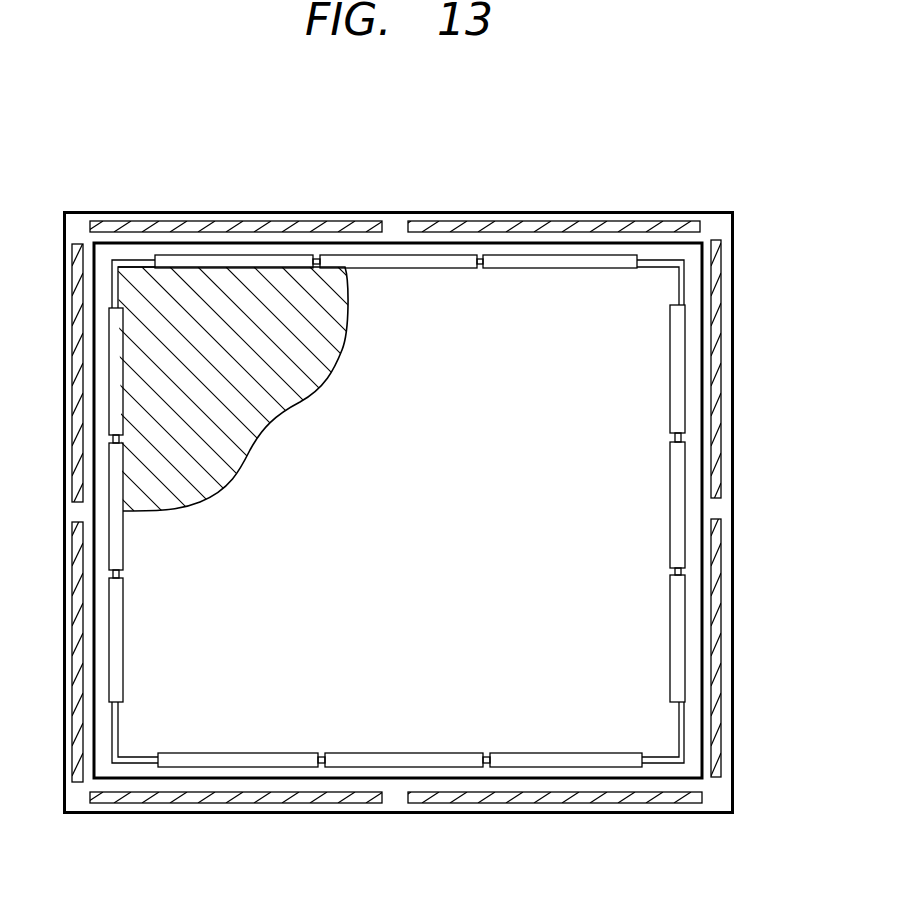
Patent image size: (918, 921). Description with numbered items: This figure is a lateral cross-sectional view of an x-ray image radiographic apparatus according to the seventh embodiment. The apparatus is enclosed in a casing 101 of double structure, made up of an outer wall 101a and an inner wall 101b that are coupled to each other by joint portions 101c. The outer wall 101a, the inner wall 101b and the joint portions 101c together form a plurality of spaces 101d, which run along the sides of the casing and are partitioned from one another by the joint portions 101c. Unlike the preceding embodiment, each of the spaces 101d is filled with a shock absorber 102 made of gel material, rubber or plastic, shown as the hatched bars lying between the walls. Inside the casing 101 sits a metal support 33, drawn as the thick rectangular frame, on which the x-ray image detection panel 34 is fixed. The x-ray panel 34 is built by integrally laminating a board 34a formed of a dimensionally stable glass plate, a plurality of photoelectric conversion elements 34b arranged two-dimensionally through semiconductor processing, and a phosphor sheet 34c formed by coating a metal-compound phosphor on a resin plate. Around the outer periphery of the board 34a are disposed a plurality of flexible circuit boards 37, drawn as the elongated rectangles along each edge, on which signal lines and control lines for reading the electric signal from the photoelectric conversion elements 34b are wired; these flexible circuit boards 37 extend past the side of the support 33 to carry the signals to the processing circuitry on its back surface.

The support 33 is at (110, 260).
The x-ray image detection panel 34 is at (417, 415).
The board 34a is at (140, 260).
The photoelectric conversion elements 34b is at (242, 293).
The phosphor sheet 34c is at (428, 305).
The flexible circuit boards 37 is at (585, 260).
The casing 101 is at (460, 513).
The outer wall 101a is at (728, 470).
The inner wall 101b is at (707, 430).
The joint portions 101c is at (715, 510).
The spaces 101d is at (715, 600).
The shock absorber 102 is at (464, 512).